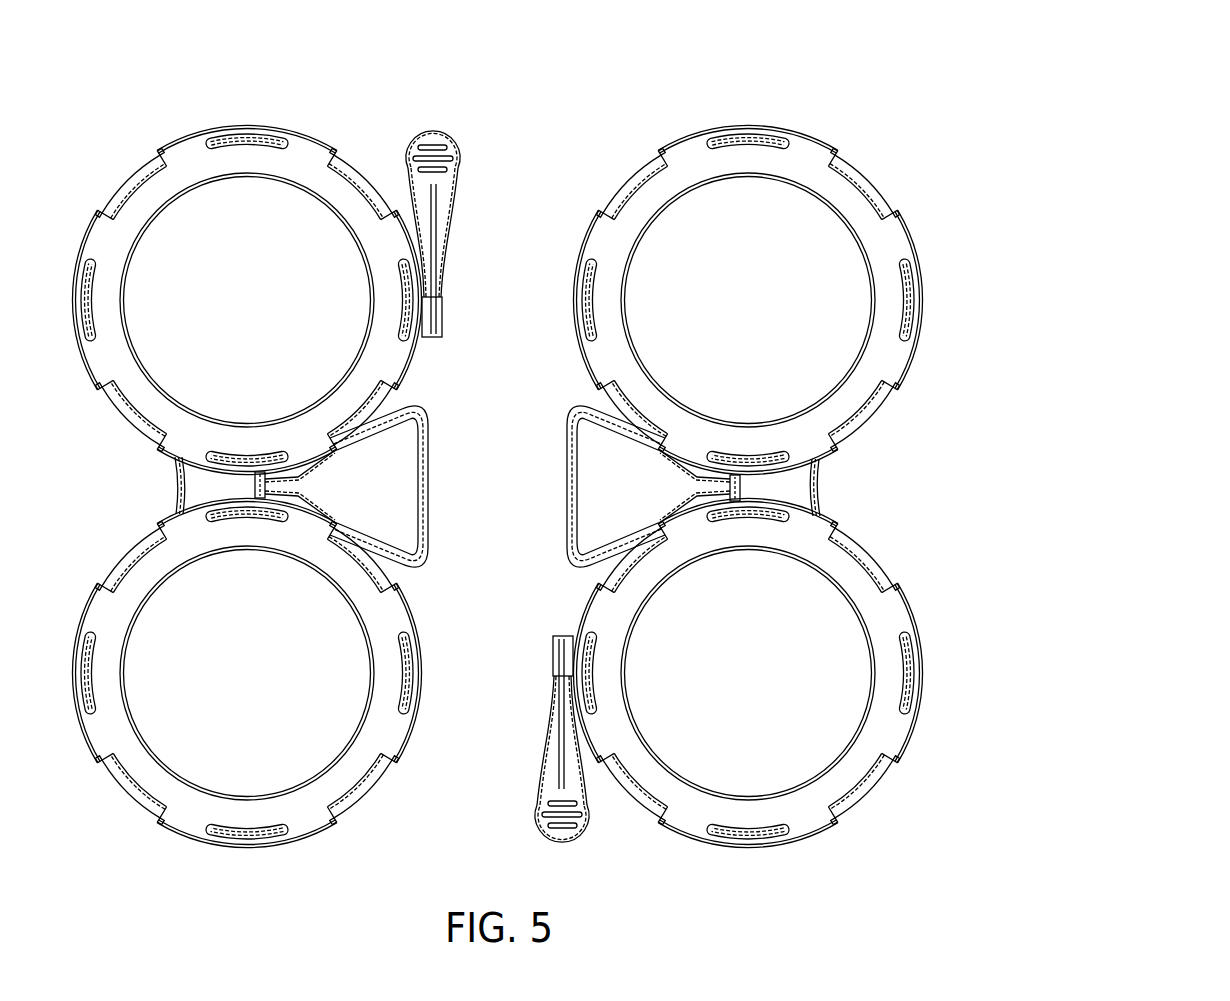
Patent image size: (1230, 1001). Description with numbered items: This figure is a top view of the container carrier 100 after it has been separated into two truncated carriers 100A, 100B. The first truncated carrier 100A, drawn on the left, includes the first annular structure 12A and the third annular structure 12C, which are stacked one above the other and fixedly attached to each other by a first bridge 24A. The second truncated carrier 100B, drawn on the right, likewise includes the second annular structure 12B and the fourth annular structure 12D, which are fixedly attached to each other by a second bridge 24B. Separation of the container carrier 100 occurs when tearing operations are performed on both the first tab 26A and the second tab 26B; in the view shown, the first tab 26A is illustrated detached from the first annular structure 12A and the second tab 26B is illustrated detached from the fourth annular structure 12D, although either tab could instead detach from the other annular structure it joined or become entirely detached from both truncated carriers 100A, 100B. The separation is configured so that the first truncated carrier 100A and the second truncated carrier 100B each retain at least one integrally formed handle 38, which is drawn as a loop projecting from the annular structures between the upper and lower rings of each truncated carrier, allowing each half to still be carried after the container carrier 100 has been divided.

The container carrier 100 is at (623, 460).
The first truncated carrier 100A is at (297, 480).
The second truncated carrier 100B is at (710, 483).
The first annular structure 12A is at (184, 846).
The second annular structure 12B is at (685, 846).
The third annular structure 12C is at (187, 121).
The fourth annular structure 12D is at (687, 122).
The first bridge 24A is at (200, 483).
The second bridge 24B is at (797, 480).
The first tab 26A is at (563, 843).
The second tab 26B is at (434, 129).
The handle 38 is at (420, 498).